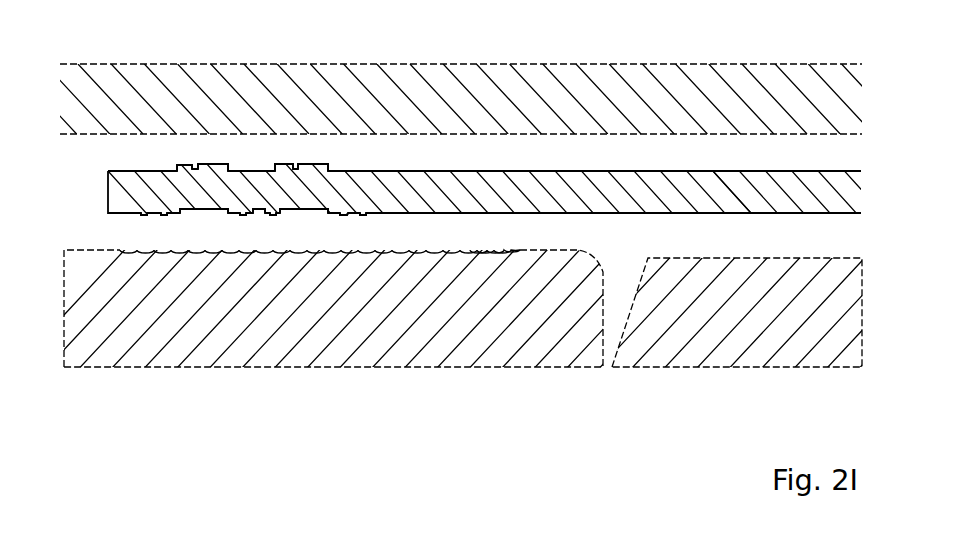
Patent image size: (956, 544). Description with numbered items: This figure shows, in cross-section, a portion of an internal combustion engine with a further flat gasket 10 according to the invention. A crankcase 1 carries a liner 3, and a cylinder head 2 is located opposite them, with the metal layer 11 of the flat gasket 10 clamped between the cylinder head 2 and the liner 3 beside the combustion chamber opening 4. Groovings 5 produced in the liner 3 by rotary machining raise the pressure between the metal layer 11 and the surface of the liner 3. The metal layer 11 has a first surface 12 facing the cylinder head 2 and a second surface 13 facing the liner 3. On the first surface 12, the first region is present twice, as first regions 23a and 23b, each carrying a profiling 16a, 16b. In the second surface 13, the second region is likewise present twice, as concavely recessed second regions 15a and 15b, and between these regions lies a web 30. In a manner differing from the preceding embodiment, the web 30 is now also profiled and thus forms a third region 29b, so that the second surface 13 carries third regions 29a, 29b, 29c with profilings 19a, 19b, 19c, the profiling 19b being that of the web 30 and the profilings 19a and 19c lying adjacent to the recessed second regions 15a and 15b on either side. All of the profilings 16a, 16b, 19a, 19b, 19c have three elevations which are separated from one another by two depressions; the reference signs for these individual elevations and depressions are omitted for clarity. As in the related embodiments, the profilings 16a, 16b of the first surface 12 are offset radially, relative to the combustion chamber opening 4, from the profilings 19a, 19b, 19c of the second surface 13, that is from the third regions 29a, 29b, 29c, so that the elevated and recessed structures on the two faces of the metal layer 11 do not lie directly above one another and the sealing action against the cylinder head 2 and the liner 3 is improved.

The crankcase 1 is at (730, 347).
The cylinder head 2 is at (497, 80).
The liner 3 is at (332, 347).
The combustion chamber opening 4 is at (44, 326).
The groovings 5 is at (478, 253).
The flat gasket 10 is at (842, 185).
The metal layer 11 is at (728, 199).
The first surface 12 is at (555, 171).
The second surface 13 is at (603, 213).
The second region 15a is at (190, 213).
The second region 15b is at (308, 213).
The profiling 16a is at (212, 164).
The profiling 16b is at (287, 164).
The profiling 19a is at (143, 214).
The profiling 19b is at (270, 214).
The profiling 19c is at (362, 213).
The first region 23a is at (182, 166).
The first region 23b is at (317, 164).
The third region 29a is at (165, 214).
The third region 29b is at (238, 214).
The third region 29c is at (343, 214).
The web 30 is at (255, 214).